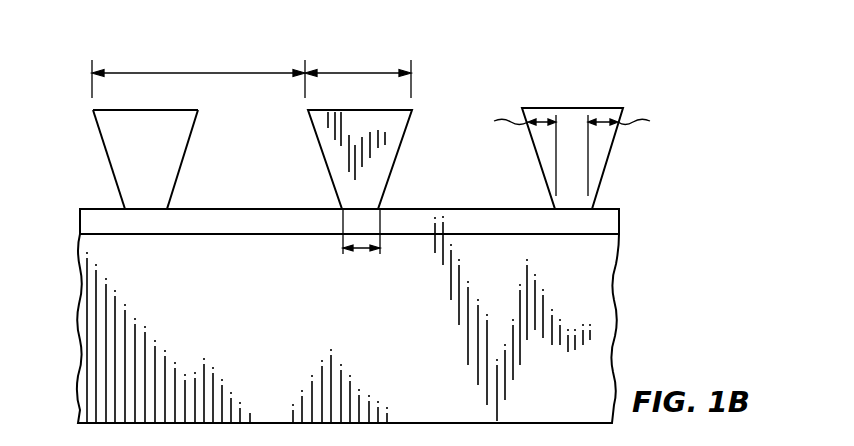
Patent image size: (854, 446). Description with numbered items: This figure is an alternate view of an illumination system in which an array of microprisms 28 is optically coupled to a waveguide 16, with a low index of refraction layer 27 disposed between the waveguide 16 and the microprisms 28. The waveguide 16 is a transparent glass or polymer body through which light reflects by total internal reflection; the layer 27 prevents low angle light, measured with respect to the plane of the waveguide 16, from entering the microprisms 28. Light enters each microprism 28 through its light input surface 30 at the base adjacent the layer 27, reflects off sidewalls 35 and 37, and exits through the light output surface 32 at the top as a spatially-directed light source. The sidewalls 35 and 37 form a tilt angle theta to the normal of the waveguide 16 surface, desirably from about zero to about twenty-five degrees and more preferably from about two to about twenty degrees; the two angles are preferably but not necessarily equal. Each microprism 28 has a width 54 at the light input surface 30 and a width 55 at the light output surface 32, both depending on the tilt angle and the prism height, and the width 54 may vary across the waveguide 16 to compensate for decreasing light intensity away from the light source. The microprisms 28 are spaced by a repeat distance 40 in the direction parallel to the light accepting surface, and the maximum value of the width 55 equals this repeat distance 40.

The waveguide 16 is at (616, 279).
The low index of refraction layer 27 is at (619, 218).
The microprism 28 is at (604, 83).
The light input surface 30 is at (151, 208).
The light output surface 32 is at (161, 111).
The sidewall 35 is at (107, 155).
The sidewall 37 is at (184, 155).
The repeat distance 40 is at (203, 73).
The width dimension 54 is at (364, 251).
The width dimension 55 is at (370, 73).